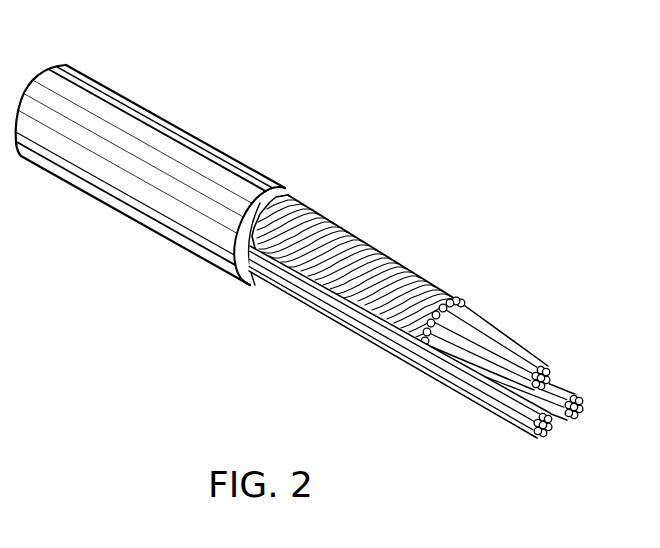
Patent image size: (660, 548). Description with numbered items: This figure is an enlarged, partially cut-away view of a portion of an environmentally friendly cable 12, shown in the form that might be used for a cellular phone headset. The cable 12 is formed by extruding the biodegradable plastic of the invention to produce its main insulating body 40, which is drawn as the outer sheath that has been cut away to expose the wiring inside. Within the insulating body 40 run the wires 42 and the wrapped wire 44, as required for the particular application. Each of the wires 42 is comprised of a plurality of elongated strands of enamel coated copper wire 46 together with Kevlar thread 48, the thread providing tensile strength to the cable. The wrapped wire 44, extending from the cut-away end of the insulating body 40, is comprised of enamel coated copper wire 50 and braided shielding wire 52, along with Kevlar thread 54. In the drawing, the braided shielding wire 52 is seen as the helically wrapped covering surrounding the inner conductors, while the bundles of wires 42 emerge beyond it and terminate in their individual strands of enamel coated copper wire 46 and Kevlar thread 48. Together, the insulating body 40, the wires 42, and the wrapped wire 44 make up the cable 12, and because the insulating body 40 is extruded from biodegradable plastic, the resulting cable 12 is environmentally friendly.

The cable 12 is at (325, 270).
The main insulating body 40 is at (251, 290).
The wires 42 is at (442, 361).
The wrapped wire 44 is at (354, 264).
The enamel coated copper wire 46 is at (595, 398).
The Kevlar thread 48 is at (580, 418).
The enamel coated copper wire 50 is at (502, 334).
The braided shielding wire 52 is at (346, 240).
The Kevlar thread 54 is at (558, 341).